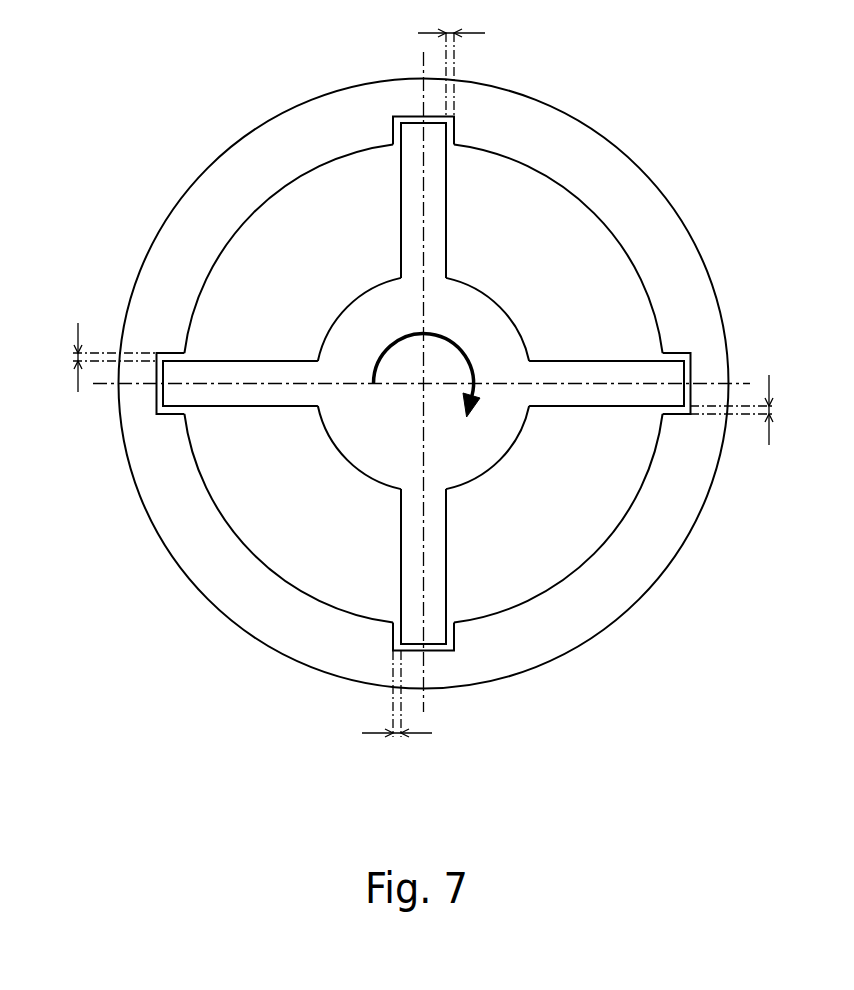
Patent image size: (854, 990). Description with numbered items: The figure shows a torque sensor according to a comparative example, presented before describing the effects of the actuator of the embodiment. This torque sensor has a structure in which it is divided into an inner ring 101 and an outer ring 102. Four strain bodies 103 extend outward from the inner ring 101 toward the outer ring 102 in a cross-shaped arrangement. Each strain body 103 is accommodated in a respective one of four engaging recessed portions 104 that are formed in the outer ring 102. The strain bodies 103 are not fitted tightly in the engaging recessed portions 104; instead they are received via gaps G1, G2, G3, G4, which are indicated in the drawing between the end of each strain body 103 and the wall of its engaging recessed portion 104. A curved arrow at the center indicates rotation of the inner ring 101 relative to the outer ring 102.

The inner ring 101 is at (507, 455).
The outer ring 102 is at (623, 166).
The strain body 103 is at (402, 223).
The engaging recessed portion 104 is at (393, 127).
The gap G1 is at (457, 58).
The gap G2 is at (97, 356).
The gap G3 is at (397, 710).
The gap G4 is at (749, 414).